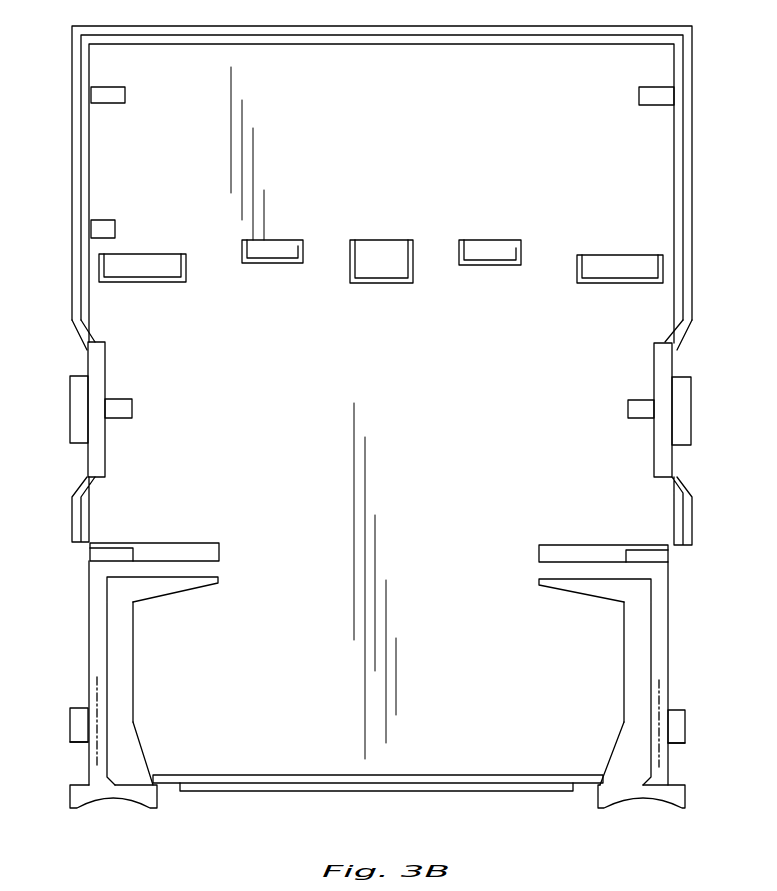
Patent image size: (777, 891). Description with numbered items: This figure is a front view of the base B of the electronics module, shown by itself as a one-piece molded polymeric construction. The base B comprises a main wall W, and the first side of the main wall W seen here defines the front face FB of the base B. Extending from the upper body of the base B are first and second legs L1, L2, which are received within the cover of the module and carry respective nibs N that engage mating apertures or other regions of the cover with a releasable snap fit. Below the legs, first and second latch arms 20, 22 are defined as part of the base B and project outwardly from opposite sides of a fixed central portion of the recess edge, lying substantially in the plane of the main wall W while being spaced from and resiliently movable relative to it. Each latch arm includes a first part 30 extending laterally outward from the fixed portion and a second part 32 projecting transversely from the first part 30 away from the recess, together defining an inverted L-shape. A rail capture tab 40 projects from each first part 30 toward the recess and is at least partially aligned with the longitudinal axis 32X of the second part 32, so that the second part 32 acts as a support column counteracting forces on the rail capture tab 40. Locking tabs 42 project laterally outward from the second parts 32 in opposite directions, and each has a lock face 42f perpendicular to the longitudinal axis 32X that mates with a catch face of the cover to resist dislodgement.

The front face FB is at (552, 147).
The base B is at (586, 337).
The main wall W is at (387, 356).
The first leg L1 is at (100, 373).
The second leg L2 is at (662, 447).
The nib N is at (73, 408).
The first latch arm 20 is at (669, 632).
The second latch arm 22 is at (88, 629).
The first part 30 is at (175, 570).
The second part 32 is at (100, 657).
The longitudinal axis 32X is at (98, 747).
The rail capture tab 40 is at (110, 553).
The locking tab 42 is at (78, 720).
The lock face 42f is at (80, 745).